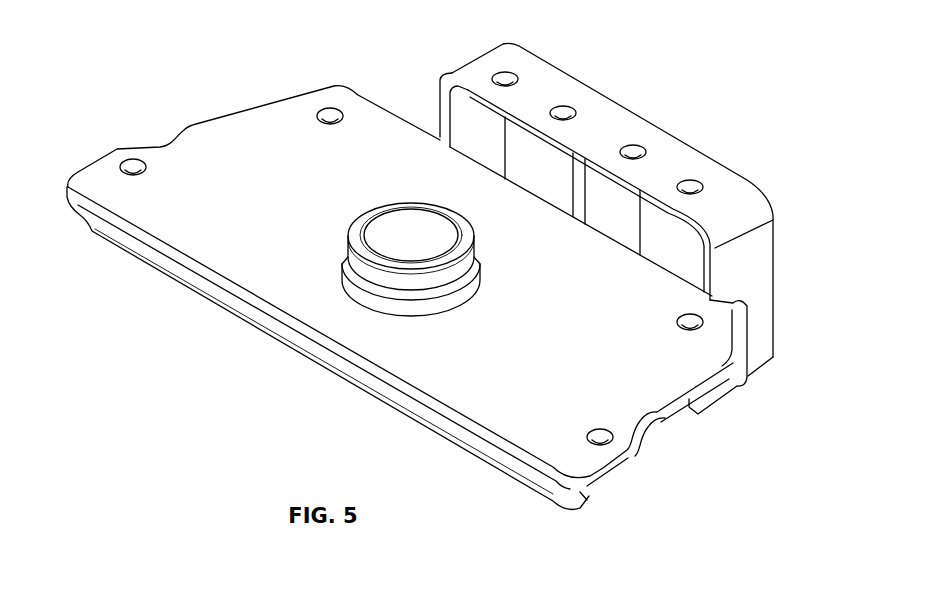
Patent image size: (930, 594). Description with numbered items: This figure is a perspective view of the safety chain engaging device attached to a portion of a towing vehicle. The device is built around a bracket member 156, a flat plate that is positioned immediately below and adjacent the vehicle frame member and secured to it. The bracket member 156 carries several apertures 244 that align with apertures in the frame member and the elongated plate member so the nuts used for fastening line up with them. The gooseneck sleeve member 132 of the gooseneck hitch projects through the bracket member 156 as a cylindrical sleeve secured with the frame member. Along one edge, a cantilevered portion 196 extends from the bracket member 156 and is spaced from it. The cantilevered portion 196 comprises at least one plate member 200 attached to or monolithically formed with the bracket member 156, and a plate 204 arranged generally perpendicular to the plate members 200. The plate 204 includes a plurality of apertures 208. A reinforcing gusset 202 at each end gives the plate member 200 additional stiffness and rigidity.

The gooseneck sleeve member 132 is at (369, 277).
The bracket member 156 is at (500, 410).
The cantilevered portion 196 is at (762, 163).
The plate member 200 is at (770, 292).
The reinforcing gusset 202 is at (433, 132).
The plate 204 is at (679, 150).
The apertures 208 is at (505, 79).
The apertures 244 is at (133, 167).